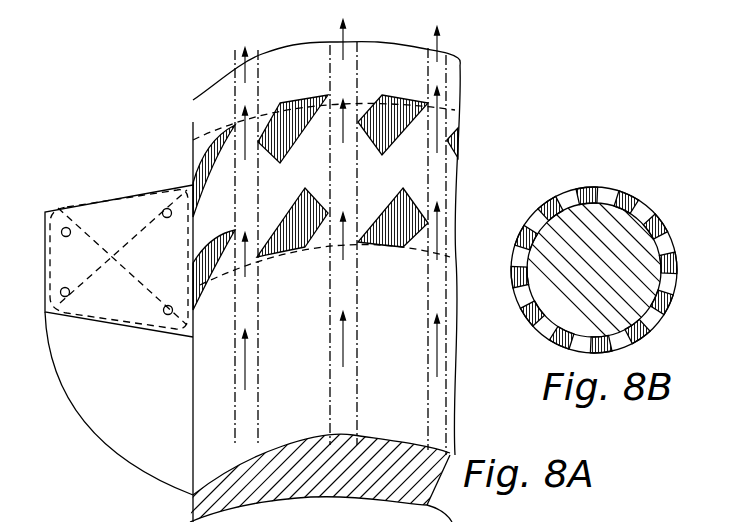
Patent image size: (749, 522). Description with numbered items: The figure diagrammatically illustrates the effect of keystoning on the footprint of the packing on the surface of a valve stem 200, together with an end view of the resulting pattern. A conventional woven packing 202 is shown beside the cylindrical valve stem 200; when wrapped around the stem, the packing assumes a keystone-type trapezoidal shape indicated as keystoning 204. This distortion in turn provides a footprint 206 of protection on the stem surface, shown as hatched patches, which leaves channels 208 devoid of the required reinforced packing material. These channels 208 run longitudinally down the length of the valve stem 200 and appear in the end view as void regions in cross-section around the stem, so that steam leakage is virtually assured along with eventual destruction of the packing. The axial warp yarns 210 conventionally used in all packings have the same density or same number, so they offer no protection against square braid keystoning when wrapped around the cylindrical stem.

In FIG. 8A, the valve stem 200 is at (407, 60).
In FIG. 8B, the valve stem 200 is at (633, 262).
In FIG. 8A, the woven packing 202 is at (112, 199).
In FIG. 8A, the keystoning 204 is at (133, 190).
In FIG. 8A, the footprint 206 is at (220, 130).
In FIG. 8A, the channels 208 is at (333, 43).
In FIG. 8B, the channels 208 is at (568, 192).
In FIG. 8A, the warp yarns 210 is at (65, 227).